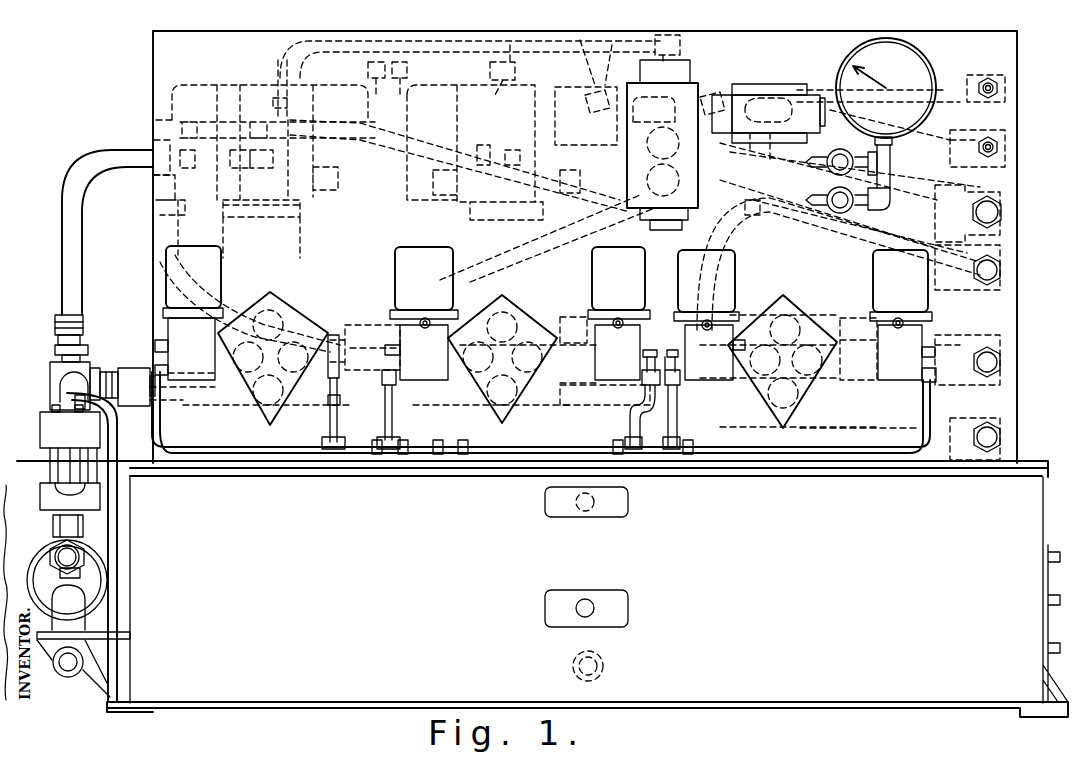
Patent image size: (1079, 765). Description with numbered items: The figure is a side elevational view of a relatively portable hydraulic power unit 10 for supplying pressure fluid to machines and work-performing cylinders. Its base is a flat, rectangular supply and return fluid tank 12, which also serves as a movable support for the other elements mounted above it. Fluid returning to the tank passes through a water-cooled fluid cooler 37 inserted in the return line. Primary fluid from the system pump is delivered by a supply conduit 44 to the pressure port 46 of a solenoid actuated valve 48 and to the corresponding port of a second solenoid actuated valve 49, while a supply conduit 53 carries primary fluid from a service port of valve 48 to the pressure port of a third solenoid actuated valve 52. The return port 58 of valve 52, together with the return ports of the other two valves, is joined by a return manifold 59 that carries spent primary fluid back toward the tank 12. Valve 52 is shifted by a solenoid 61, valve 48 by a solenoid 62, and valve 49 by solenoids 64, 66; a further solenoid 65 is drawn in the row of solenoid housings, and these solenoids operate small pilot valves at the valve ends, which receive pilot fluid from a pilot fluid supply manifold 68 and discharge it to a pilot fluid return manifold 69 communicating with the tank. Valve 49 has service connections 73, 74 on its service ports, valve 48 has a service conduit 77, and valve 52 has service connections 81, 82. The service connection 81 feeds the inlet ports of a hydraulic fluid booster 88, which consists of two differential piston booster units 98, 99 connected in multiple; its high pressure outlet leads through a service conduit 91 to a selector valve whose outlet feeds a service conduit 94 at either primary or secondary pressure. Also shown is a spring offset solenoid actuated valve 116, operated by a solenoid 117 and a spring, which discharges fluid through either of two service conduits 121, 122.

The power unit 10 is at (200, 709).
The supply and return fluid tank 12 is at (335, 690).
The fluid cooler 37 is at (40, 540).
The supply conduit 44 is at (858, 318).
The pressure port 46 is at (55, 382).
The solenoid actuated valve 48 is at (518, 420).
The solenoid actuated valve 49 is at (836, 402).
The solenoid actuated valve 52 is at (245, 423).
The supply conduit 53 is at (315, 318).
The return port 58 is at (50, 428).
The return manifold 59 is at (393, 428).
The solenoid 61 is at (203, 250).
The solenoid 62 is at (402, 248).
The solenoid 64 is at (680, 266).
The solenoid valve 65 is at (590, 278).
The solenoid 66 is at (873, 265).
The pilot fluid supply manifold 68 is at (155, 348).
The pilot fluid return manifold 69 is at (288, 455).
The service connection 73 is at (1000, 265).
The service connection 74 is at (1000, 357).
The service conduit 77 is at (1000, 437).
The service connection 81 is at (640, 38).
The service connection 82 is at (400, 280).
The hydraulic fluid booster 88 is at (395, 42).
The service conduit 91 is at (495, 45).
The service conduit 94 is at (1000, 208).
The booster unit 98 is at (205, 88).
The booster unit 99 is at (582, 42).
The spring offset solenoid actuated valve 116 is at (773, 82).
The solenoid 117 is at (725, 86).
The service conduit 121 is at (930, 82).
The service conduit 122 is at (922, 108).